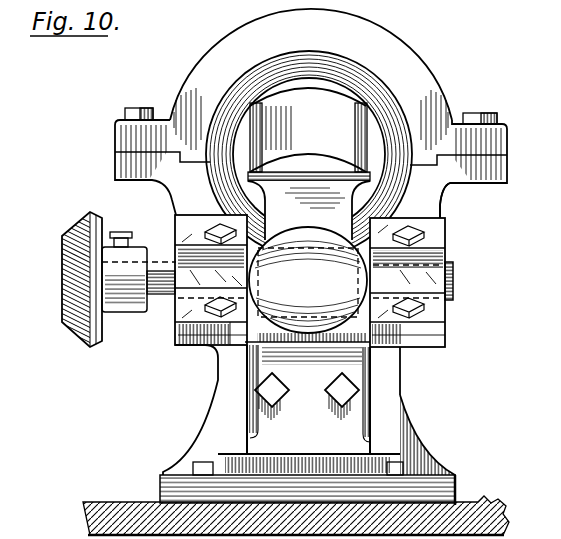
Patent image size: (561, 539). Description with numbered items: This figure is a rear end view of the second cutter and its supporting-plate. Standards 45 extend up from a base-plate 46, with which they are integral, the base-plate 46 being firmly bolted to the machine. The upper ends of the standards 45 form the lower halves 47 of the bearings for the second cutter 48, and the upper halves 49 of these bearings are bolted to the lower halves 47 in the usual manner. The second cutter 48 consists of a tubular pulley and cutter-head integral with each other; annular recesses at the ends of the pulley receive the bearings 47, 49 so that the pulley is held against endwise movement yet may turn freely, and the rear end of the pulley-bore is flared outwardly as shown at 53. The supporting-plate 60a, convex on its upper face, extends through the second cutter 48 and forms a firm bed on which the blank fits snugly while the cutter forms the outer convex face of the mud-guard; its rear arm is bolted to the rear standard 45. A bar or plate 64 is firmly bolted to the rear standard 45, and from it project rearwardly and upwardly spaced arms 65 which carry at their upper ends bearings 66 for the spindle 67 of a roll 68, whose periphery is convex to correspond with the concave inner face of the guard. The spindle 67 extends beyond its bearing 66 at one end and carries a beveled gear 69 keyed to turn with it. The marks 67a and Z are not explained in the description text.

The standards 45 is at (423, 443).
The base-plate 46 is at (448, 491).
The lower halves of bearings 47 is at (428, 200).
The second cutter 48 is at (343, 66).
The upper halves of bearings 49 is at (311, 113).
The flared rear end of pulley-bore 53 is at (279, 76).
The supporting-plate 60a is at (309, 211).
The bar or plate 64 is at (307, 396).
The arms 65 is at (223, 369).
The bearings 66 is at (176, 326).
The spindle 67 is at (163, 272).
The bore 67a is at (358, 143).
The roll 68 is at (308, 280).
The beveled gear 69 is at (62, 312).
The ground Z is at (479, 507).